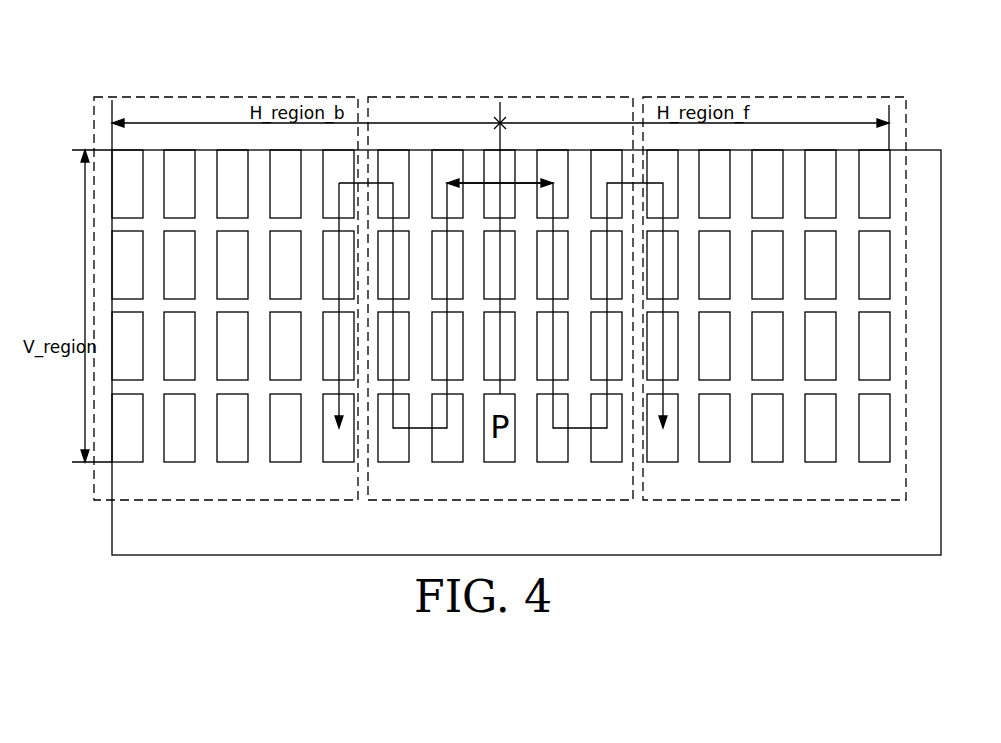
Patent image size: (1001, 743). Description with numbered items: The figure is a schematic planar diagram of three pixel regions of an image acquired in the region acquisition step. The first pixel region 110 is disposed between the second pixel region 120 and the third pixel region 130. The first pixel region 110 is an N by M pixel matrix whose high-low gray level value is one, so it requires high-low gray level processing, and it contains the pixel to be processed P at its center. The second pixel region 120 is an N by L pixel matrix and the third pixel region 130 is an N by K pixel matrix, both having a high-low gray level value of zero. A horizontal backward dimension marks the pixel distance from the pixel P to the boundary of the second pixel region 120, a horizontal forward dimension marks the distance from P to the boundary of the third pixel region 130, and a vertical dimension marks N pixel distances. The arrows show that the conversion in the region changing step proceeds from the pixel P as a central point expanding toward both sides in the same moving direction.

The first pixel region 110 is at (453, 105).
The second pixel region 120 is at (165, 105).
The third pixel region 130 is at (758, 105).